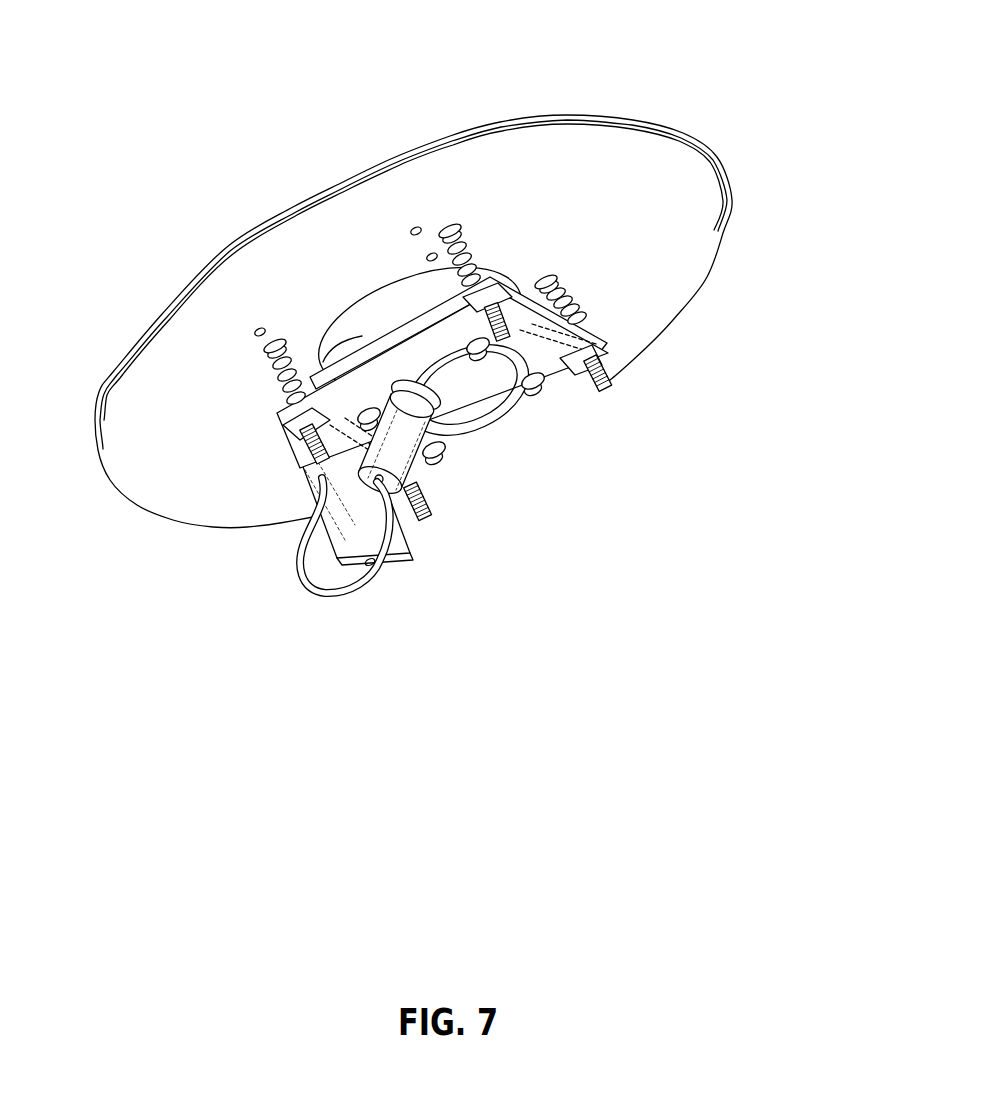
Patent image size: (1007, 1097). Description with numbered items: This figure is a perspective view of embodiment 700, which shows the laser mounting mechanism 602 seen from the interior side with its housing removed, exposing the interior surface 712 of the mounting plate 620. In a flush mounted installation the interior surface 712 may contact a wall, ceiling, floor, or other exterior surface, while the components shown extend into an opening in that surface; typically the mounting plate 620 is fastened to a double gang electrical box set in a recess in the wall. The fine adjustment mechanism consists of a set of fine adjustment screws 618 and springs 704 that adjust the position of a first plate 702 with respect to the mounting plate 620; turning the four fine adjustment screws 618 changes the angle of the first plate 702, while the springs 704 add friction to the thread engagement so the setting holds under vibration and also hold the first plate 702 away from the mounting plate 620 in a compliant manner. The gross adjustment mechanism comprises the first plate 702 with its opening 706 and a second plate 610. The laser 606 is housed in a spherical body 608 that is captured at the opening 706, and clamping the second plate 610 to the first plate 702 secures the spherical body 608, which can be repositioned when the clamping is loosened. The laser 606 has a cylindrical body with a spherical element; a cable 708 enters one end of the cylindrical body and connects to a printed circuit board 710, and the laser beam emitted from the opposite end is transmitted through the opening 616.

The laser mounting mechanism 602 is at (450, 396).
The laser 606 is at (418, 462).
The spherical body 608 is at (457, 400).
The second plate 610 is at (362, 342).
The opening 616 is at (387, 290).
The fine adjustment screws 618 is at (523, 310).
The mounting plate 620 is at (467, 118).
The embodiment 700 is at (450, 427).
The first plate 702 is at (563, 392).
The springs 704 is at (275, 377).
The opening 706 is at (474, 378).
The cable 708 is at (350, 587).
The printed circuit board 710 is at (300, 467).
The interior surface 712 is at (660, 178).